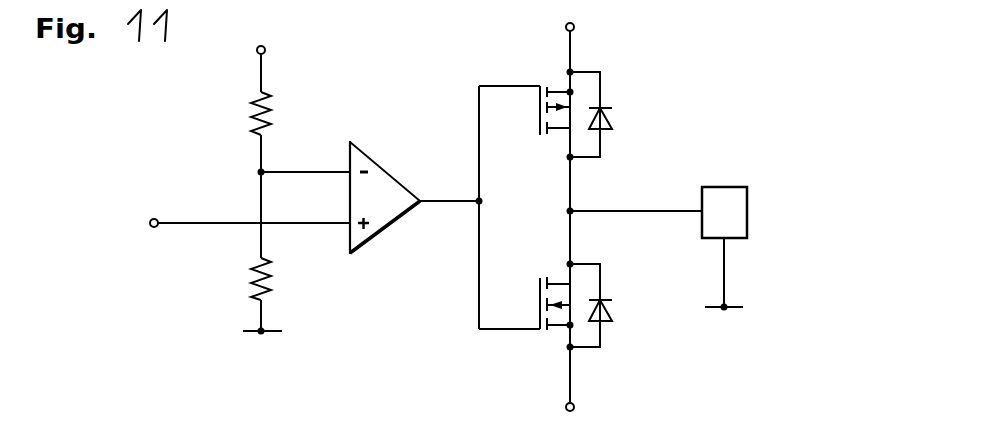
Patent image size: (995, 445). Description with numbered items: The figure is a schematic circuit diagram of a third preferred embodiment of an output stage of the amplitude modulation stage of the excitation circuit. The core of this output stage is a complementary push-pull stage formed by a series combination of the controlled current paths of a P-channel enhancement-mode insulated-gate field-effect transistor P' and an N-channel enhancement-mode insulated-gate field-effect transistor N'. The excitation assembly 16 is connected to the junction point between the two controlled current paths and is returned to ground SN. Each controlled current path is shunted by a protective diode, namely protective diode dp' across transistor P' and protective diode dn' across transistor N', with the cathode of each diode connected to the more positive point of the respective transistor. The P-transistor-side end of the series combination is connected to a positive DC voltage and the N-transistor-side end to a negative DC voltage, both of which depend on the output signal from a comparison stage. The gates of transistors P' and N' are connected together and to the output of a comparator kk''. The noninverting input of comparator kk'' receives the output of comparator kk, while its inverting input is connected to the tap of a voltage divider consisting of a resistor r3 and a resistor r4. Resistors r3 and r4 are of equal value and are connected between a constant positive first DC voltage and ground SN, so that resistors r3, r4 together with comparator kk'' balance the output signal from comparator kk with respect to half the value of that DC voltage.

The resistor r3 is at (252, 112).
The resistor r4 is at (252, 277).
The comparator kk is at (230, 223).
The comparator kk'' is at (389, 182).
The ground SN is at (513, 319).
The P-channel enhancement-mode insulated-gate field-effect transistor P' is at (550, 129).
The N-channel enhancement-mode insulated-gate field-effect transistor N' is at (549, 276).
The protective diode dp' is at (626, 114).
The protective diode dn' is at (628, 305).
The excitation assembly 16 is at (736, 204).